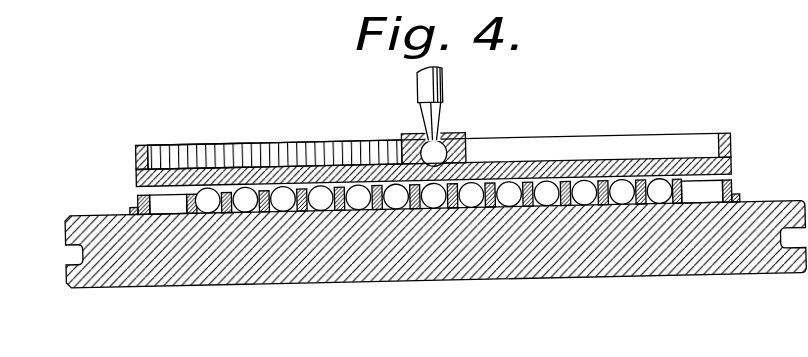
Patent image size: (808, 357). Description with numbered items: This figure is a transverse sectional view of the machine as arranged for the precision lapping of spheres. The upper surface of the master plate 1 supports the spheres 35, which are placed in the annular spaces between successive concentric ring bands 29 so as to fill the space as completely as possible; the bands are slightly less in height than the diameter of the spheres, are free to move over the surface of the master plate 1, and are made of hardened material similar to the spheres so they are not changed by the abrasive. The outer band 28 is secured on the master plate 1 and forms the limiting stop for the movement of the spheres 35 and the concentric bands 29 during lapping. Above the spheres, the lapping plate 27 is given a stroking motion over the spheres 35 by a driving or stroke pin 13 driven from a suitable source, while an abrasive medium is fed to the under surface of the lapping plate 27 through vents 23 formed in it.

The master plate 1 is at (618, 288).
The driving or stroke pin 13 is at (443, 117).
The vents 23 is at (281, 184).
The lapping plate 27 is at (665, 170).
The outer band 28 is at (138, 198).
The concentric ring bands 29 is at (568, 197).
The spheres 35 is at (362, 195).